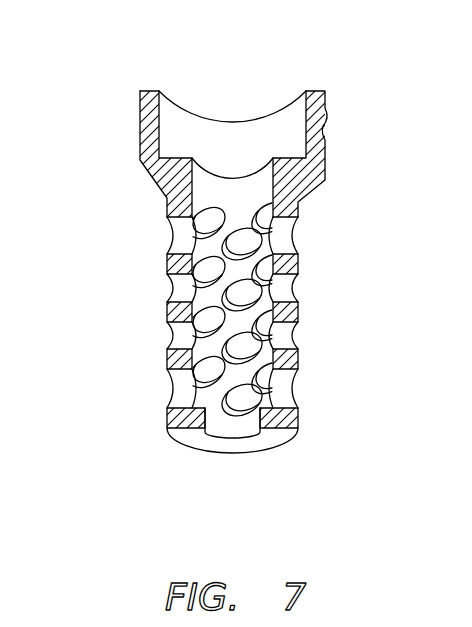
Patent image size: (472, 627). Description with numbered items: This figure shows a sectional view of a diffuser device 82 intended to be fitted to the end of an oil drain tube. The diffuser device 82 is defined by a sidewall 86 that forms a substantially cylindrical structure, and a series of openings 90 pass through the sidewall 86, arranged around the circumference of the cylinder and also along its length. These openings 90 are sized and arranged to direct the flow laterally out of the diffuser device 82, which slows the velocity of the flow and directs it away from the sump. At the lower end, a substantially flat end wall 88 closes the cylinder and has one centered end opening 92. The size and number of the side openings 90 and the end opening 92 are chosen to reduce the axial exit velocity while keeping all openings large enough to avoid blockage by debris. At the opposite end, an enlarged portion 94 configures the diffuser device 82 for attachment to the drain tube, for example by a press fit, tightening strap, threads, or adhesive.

The diffuser device 82 is at (236, 279).
The enlarged portion 94 is at (150, 113).
The sidewall 86 is at (300, 260).
The openings 90 is at (173, 242).
The end wall 88 is at (188, 438).
The end opening 92 is at (233, 432).